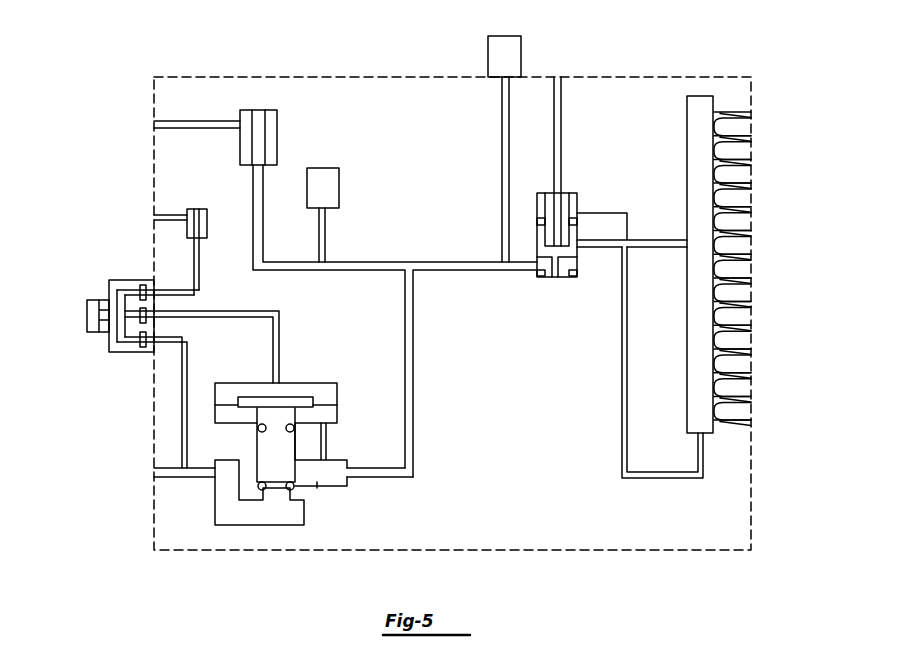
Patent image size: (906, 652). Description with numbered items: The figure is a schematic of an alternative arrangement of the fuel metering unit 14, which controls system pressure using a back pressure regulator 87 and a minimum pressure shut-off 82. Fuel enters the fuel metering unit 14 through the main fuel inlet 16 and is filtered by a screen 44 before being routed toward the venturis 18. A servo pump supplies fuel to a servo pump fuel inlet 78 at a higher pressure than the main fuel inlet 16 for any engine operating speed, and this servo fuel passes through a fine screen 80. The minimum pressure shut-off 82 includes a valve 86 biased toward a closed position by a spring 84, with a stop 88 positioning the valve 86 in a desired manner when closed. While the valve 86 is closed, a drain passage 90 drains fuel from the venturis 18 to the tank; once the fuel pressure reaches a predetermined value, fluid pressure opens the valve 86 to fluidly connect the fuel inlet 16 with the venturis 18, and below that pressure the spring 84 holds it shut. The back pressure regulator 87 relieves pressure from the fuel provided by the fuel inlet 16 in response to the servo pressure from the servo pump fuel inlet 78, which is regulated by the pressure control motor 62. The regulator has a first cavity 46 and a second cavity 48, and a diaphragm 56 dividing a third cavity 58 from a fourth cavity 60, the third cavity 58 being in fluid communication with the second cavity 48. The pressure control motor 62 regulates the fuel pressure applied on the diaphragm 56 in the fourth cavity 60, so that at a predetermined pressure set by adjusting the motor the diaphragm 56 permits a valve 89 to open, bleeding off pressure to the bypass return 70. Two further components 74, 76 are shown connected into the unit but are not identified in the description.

The fuel metering unit 14 is at (680, 54).
The fuel inlet 16 is at (154, 128).
The venturis 18 is at (745, 315).
The screen 44 is at (258, 118).
The first cavity 46 is at (253, 525).
The second cavity 48 is at (317, 486).
The diaphragm 56 is at (255, 403).
The third cavity 58 is at (332, 417).
The fourth cavity 60 is at (298, 383).
The pressure control motor 62 is at (116, 347).
The bypass return 70 is at (154, 473).
The sensor 74 is at (521, 53).
The sensor 76 is at (339, 193).
The servo pump fuel inlet 78 is at (154, 217).
The fine screen 80 is at (198, 213).
The minimum pressure shut-off 82 is at (526, 279).
The spring 84 is at (560, 202).
The valve 86 is at (572, 233).
The back pressure regulator 87 is at (203, 487).
The stop 88 is at (557, 277).
The valve 89 is at (287, 452).
The drain passage 90 is at (622, 434).